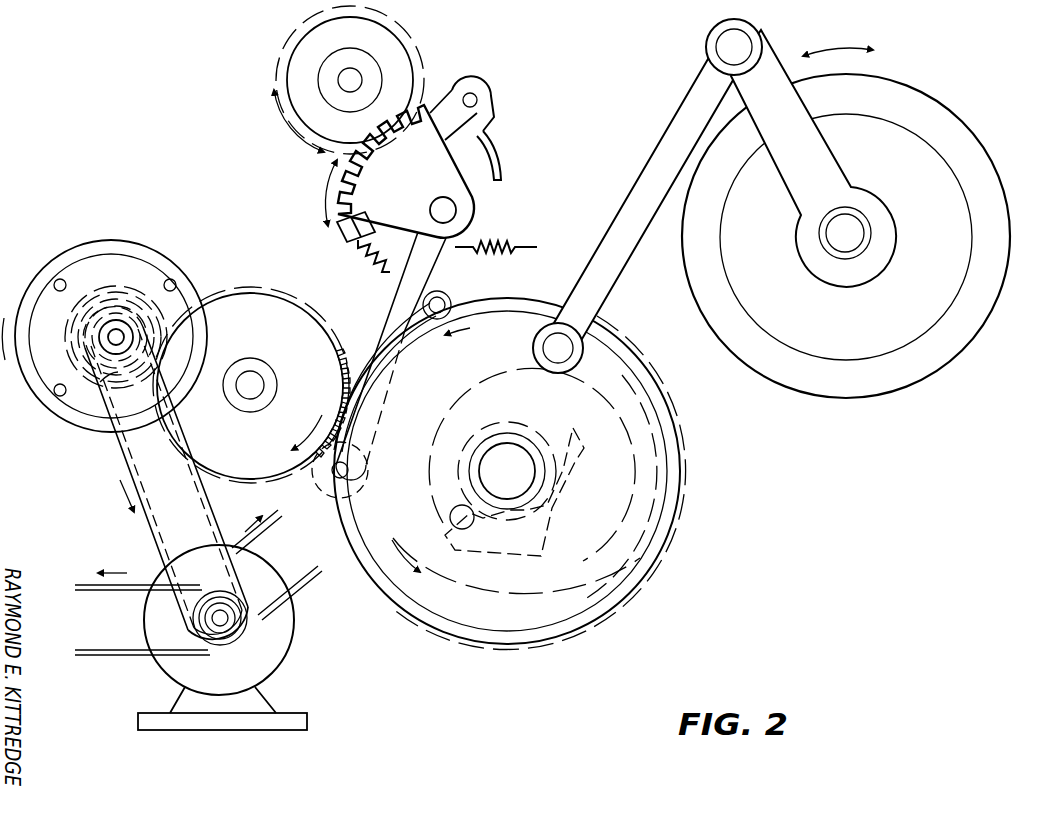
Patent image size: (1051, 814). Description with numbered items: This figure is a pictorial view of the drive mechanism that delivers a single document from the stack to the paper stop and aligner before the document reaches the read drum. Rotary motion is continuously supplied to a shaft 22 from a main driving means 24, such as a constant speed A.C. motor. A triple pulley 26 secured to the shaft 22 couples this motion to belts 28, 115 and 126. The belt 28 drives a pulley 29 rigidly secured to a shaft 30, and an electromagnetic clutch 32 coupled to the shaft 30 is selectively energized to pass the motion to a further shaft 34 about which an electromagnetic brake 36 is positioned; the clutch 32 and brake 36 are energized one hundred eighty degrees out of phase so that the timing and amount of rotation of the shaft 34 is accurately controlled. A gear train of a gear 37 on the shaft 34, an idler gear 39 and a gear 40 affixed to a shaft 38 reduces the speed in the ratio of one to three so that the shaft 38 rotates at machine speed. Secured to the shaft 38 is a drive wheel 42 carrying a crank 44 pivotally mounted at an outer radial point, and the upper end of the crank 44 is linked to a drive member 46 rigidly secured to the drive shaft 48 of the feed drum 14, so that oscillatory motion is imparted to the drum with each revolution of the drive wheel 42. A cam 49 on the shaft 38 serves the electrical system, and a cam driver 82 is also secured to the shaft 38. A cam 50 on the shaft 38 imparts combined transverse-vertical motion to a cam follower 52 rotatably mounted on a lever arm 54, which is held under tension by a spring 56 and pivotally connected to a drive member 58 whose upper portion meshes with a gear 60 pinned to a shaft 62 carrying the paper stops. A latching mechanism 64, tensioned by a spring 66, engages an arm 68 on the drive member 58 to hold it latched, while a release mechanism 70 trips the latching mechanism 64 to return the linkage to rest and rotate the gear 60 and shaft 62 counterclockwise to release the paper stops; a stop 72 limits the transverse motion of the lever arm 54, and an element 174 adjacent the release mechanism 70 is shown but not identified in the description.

The feed drum 14 is at (1002, 197).
The shaft 22 is at (222, 625).
The main driving means 24 is at (292, 654).
The triple pulley 26 is at (212, 647).
The belt 28 is at (147, 499).
The pulley 29 is at (100, 382).
The shaft 30 is at (118, 318).
The electromagnetic clutch 32 is at (143, 252).
The shaft 34 is at (120, 330).
The electromagnetic brake 36 is at (193, 268).
The gear 37 is at (98, 297).
The shaft 38 is at (514, 478).
The idler gear 39 is at (269, 336).
The gear 40 is at (638, 590).
The drive wheel 42 is at (675, 448).
The crank 44 is at (610, 282).
The drive member 46 is at (811, 176).
The drive shaft 48 is at (858, 241).
The cam 49 is at (524, 434).
The cam 50 is at (527, 600).
The cam follower 52 is at (320, 480).
The lever arm 54 is at (432, 286).
The spring 56 is at (508, 246).
The drive member 58 is at (414, 180).
The gear 60 is at (292, 62).
The shaft 62 is at (360, 80).
The latching mechanism 64 is at (461, 126).
The spring 66 is at (372, 262).
The arm 68 is at (371, 232).
The release mechanism 70 is at (495, 116).
The stop 72 is at (448, 300).
The cam driver 82 is at (575, 433).
The belt 115 is at (258, 540).
The belt 126 is at (127, 592).
The hook 174 is at (503, 163).